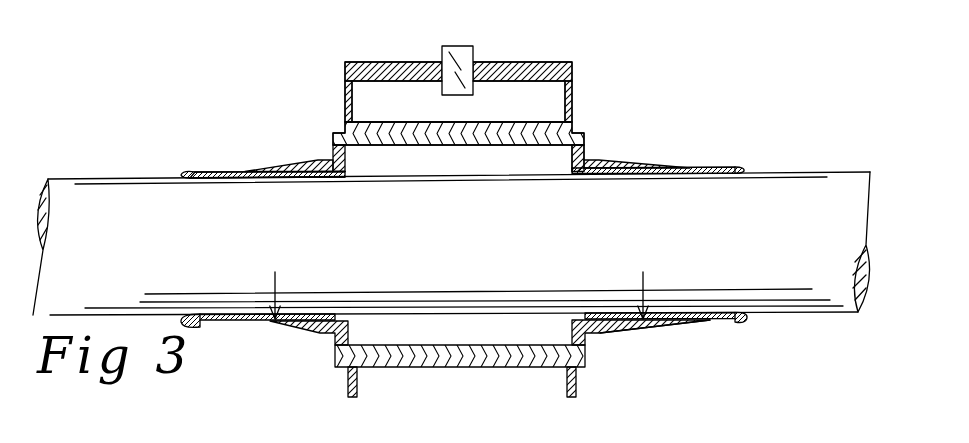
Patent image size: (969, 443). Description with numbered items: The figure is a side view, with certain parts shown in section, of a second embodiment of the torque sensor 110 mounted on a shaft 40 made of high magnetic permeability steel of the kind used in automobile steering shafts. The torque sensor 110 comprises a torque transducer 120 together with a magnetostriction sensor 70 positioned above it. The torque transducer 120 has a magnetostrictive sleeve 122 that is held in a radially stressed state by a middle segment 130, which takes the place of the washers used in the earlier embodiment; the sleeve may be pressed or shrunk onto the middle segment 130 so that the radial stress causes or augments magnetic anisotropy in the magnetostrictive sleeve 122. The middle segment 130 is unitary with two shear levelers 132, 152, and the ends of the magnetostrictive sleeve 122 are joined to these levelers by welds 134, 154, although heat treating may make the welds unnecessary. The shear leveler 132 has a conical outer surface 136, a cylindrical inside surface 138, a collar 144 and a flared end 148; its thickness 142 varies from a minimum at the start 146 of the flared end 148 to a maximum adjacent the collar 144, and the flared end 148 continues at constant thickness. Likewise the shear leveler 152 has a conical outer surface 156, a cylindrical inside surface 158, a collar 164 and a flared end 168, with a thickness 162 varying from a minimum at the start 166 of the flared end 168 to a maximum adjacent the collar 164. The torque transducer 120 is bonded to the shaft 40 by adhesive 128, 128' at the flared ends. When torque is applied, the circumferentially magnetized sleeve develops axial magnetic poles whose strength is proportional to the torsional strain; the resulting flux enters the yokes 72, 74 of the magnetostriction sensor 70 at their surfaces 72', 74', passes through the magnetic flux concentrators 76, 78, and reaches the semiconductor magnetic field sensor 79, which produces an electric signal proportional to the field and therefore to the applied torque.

The shaft 40 is at (820, 242).
The torque sensor 110 is at (293, 86).
The magnetostriction sensor 70 is at (512, 64).
The yoke 72 is at (397, 101).
The yoke 74 is at (519, 101).
The magnetic flux concentrator 76 is at (393, 61).
The magnetic flux concentrator 78 is at (510, 61).
The semiconductor magnetic field sensor 79 is at (458, 46).
The torque transducer 120 is at (671, 105).
The magnetostrictive sleeve 122 is at (437, 128).
The adhesive 128 is at (133, 151).
The adhesive 128' is at (795, 145).
The middle segment 130 is at (523, 140).
The shear leveler 132 is at (320, 168).
The weld 134 is at (343, 136).
The conical outer surface 136 is at (244, 171).
The cylindrical inside surface 138 is at (238, 179).
The thickness 142 is at (280, 347).
The collar 144 is at (350, 333).
The start of flared end 146 is at (212, 171).
The flared end 148 is at (200, 328).
The shear leveler 152 is at (612, 165).
The weld 154 is at (577, 135).
The conical outer surface 156 is at (655, 162).
The cylindrical inside surface 158 is at (690, 173).
The thickness 162 is at (648, 347).
The collar 164 is at (572, 333).
The start of flared end 166 is at (708, 323).
The flared end 168 is at (724, 325).
The surface 72' is at (381, 380).
The surface 74' is at (546, 380).